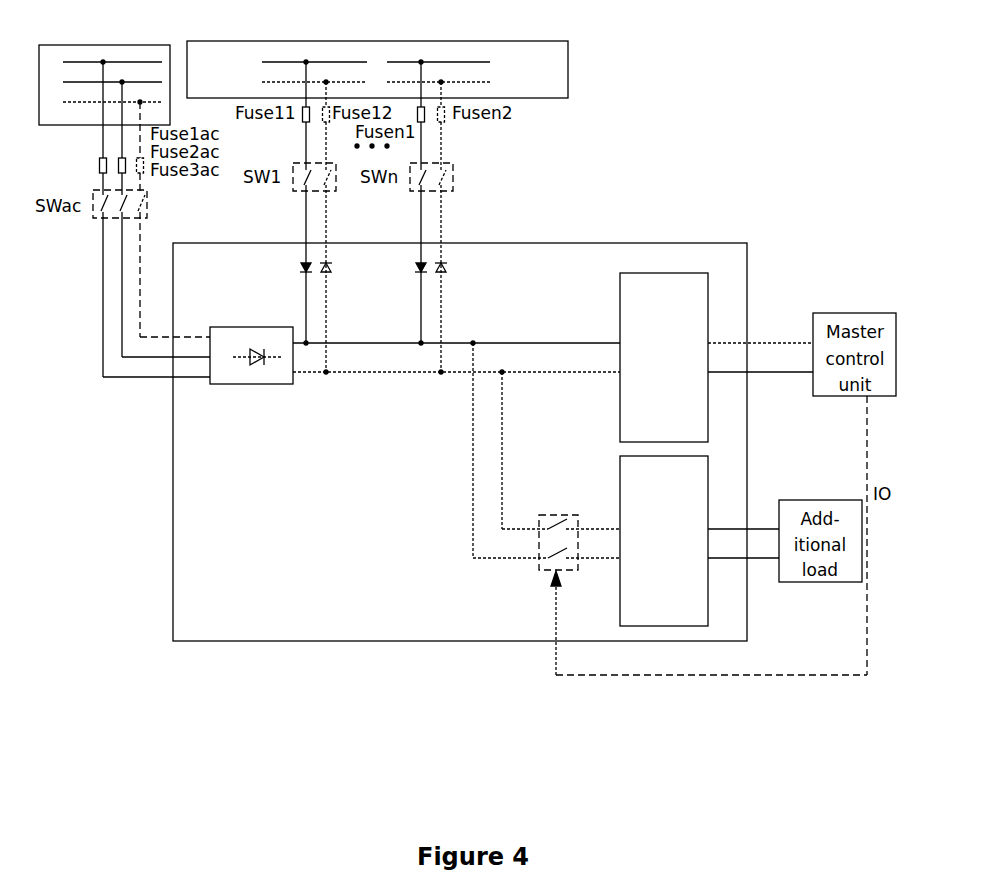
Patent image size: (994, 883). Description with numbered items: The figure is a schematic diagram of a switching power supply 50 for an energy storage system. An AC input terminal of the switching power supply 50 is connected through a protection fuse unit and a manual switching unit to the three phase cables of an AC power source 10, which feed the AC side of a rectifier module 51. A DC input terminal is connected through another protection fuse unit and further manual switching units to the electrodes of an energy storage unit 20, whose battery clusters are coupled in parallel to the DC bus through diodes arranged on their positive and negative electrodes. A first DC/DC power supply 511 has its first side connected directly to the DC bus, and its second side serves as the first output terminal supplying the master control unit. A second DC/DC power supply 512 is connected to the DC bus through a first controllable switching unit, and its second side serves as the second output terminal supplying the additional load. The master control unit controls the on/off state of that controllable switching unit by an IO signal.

The AC power source 10 is at (78, 45).
The energy storage unit 20 is at (297, 41).
The switching power supply 50 is at (490, 240).
The rectifier module 51 is at (253, 386).
The first DC/DC power supply 511 is at (653, 270).
The second DC/DC power supply 512 is at (619, 475).